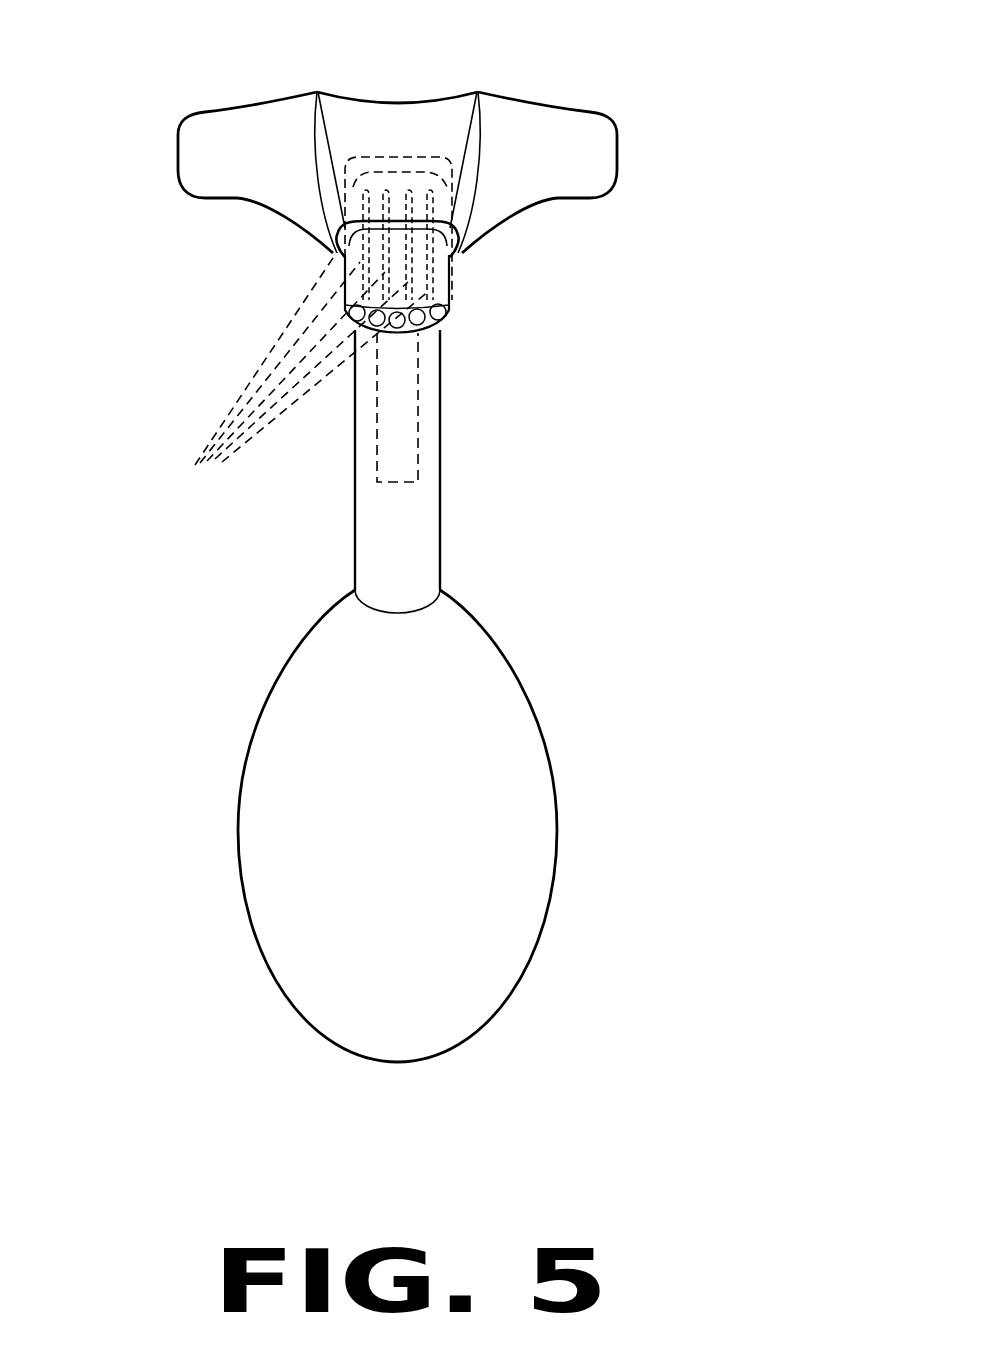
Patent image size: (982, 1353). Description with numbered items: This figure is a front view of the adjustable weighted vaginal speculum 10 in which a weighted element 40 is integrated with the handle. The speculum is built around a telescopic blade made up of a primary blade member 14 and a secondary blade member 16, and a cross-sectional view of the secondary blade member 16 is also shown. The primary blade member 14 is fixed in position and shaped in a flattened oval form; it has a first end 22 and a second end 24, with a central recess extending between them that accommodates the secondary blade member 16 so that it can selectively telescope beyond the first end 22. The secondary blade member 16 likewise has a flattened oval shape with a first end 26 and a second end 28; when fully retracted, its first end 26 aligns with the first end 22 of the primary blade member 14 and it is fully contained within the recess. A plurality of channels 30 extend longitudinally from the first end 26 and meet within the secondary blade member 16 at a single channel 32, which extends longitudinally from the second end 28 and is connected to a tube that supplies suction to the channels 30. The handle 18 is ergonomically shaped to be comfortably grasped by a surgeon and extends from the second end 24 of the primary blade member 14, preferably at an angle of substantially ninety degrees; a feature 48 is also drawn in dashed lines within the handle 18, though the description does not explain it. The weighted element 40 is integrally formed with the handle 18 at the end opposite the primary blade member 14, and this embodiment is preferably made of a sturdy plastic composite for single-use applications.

The adjustable weighted vaginal speculum 10 is at (644, 302).
The primary blade member 14 is at (335, 188).
The secondary blade member 16 is at (447, 277).
The handle 18 is at (378, 543).
The first end 22 is at (462, 231).
The second end 24 is at (403, 100).
The first end 26 is at (453, 323).
The second end 28 is at (380, 157).
The plurality of channels 30 is at (207, 443).
The single channel 32 is at (393, 160).
The weighted element 40 is at (288, 905).
The passage 48 is at (405, 425).